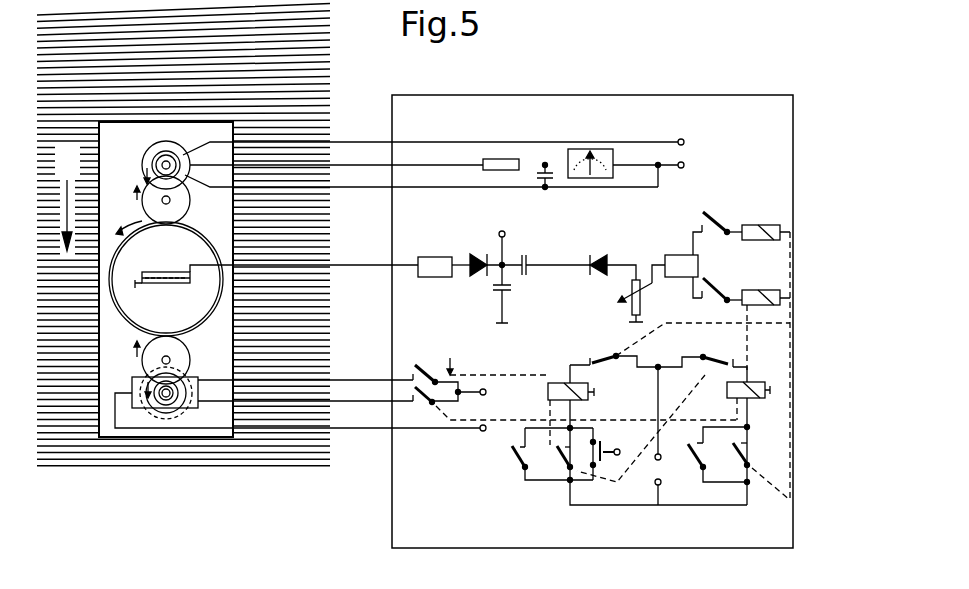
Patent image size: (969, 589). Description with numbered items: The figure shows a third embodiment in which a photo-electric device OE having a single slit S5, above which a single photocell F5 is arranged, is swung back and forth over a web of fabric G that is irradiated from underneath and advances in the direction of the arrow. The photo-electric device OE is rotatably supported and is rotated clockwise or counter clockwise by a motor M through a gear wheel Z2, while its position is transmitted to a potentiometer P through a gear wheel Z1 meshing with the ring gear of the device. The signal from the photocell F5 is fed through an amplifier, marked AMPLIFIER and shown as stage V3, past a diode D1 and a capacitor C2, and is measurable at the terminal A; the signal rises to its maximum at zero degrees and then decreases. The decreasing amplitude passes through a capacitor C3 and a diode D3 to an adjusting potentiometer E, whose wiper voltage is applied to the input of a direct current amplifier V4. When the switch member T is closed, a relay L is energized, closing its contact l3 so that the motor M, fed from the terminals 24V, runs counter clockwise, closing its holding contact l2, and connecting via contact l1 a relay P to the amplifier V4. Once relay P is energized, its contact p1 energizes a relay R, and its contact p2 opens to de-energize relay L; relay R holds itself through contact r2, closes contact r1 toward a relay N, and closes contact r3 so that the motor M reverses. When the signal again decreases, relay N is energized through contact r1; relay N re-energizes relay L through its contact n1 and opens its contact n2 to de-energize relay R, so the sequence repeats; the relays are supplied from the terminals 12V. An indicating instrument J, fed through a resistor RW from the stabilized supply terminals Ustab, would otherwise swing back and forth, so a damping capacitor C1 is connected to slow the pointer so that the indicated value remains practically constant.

The web of fabric G is at (70, 196).
The potentiometer P is at (152, 160).
The gear wheel Z1 is at (184, 203).
The photo-electric device OE is at (195, 320).
The photocell F5 is at (168, 272).
The slit S5 is at (159, 297).
The gear wheel Z2 is at (185, 358).
The motor M is at (186, 401).
The resistor RW is at (500, 158).
The damping capacitor C1 is at (541, 180).
The indicating instrument J is at (604, 148).
The stabilized voltage terminals Ustab is at (714, 157).
The amplifier AMPLIFIER is at (478, 214).
The amplifier stage V3 is at (444, 276).
The diode D1 is at (475, 254).
The terminal A is at (501, 237).
The capacitor C2 is at (498, 289).
The capacitor C3 is at (526, 256).
The diode D3 is at (602, 254).
The adjusting potentiometer E is at (633, 293).
The direct current amplifier V4 is at (688, 278).
The contact of relay L l1 is at (722, 215).
The contact of relay R r1 is at (722, 281).
The relay N is at (770, 290).
The contact of relay L l3 is at (480, 372).
The contact of relay R r3 is at (575, 406).
The 24V AC supply terminals 24V is at (510, 410).
The relay L is at (647, 435).
The contact of relay P p2 is at (594, 360).
The contact of relay N n2 is at (714, 350).
The relay R is at (757, 442).
The holding contact of relay L l2 is at (552, 454).
The contact of relay N n1 is at (577, 454).
The switch member T is at (613, 454).
The 12V DC supply terminals 12V is at (699, 483).
The holding contact of relay R r2 is at (717, 454).
The contact of relay P p1 is at (761, 471).